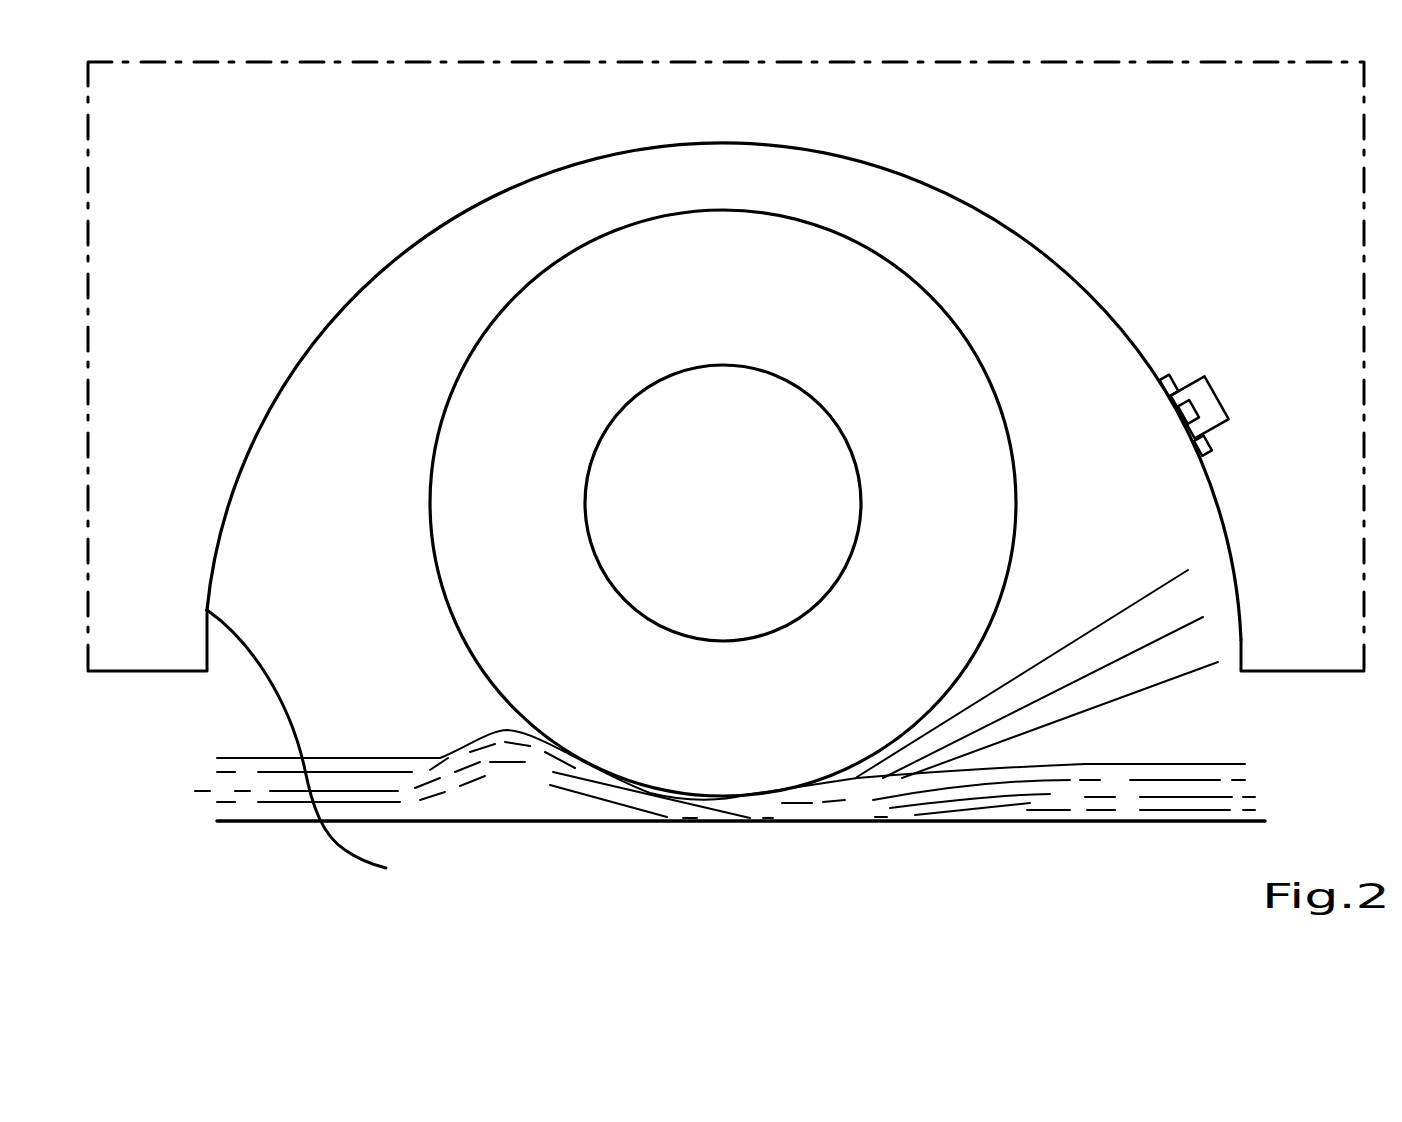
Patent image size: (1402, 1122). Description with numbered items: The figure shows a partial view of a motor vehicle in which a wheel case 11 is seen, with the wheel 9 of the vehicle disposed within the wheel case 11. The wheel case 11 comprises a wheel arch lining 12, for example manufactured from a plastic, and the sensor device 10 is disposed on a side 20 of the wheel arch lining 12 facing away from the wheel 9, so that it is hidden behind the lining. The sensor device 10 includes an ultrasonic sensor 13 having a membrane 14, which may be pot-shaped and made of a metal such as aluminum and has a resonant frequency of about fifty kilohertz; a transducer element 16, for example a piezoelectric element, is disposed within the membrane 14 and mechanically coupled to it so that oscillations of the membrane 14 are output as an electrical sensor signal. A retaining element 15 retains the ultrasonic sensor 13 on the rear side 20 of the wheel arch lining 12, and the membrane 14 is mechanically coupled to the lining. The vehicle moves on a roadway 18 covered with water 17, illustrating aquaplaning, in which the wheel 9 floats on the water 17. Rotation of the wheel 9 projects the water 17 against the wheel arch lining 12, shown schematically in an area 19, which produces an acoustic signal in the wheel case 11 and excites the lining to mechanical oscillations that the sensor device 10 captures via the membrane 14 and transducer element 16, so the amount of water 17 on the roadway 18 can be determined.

The wheel 9 is at (823, 718).
The sensor device 10 is at (1227, 396).
The wheel case 11 is at (226, 716).
The wheel arch lining 12 is at (319, 750).
The ultrasonic sensor 13 is at (1216, 393).
The membrane 14 is at (1170, 444).
The retaining element 15 is at (1207, 453).
The transducer element 16 is at (1188, 415).
The water 17 is at (627, 800).
The roadway 18 is at (1228, 820).
The area 19 is at (1122, 742).
The side 20 is at (1056, 241).